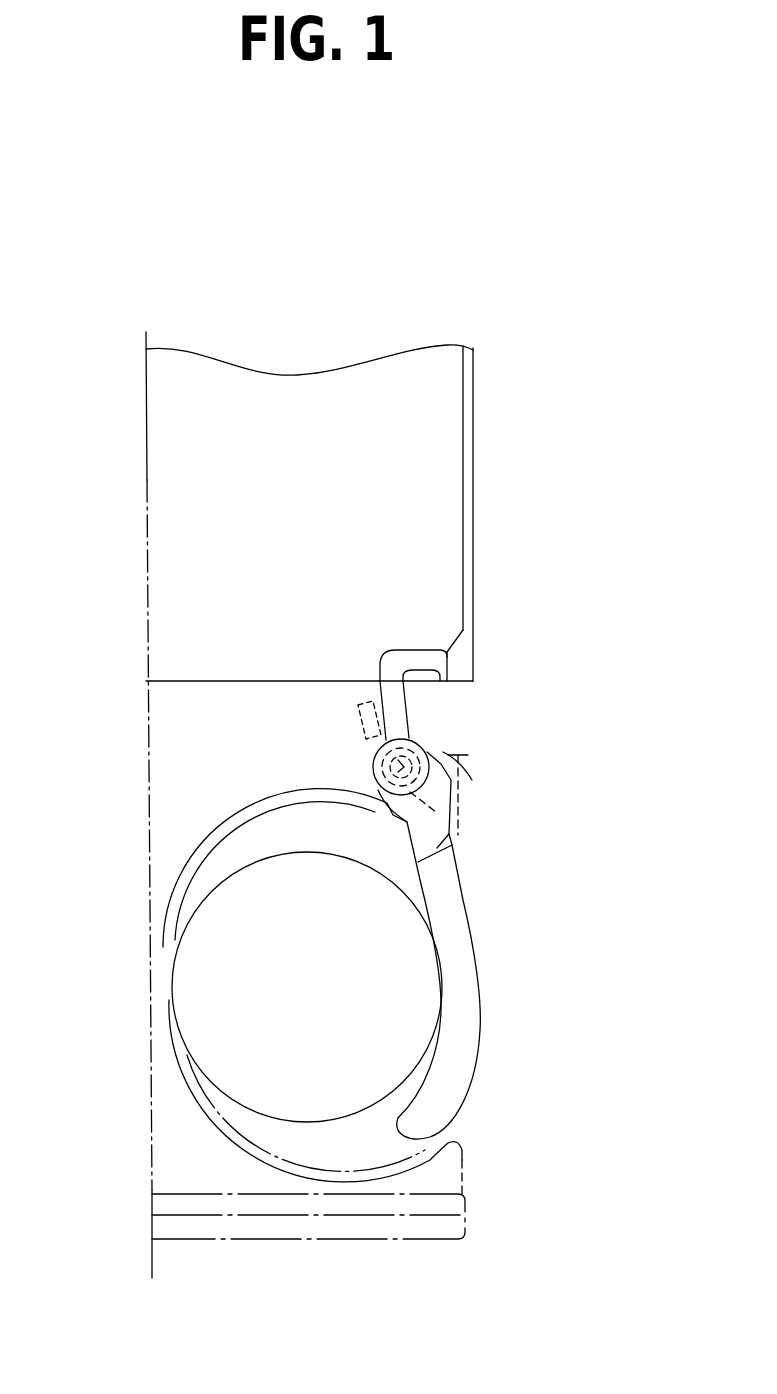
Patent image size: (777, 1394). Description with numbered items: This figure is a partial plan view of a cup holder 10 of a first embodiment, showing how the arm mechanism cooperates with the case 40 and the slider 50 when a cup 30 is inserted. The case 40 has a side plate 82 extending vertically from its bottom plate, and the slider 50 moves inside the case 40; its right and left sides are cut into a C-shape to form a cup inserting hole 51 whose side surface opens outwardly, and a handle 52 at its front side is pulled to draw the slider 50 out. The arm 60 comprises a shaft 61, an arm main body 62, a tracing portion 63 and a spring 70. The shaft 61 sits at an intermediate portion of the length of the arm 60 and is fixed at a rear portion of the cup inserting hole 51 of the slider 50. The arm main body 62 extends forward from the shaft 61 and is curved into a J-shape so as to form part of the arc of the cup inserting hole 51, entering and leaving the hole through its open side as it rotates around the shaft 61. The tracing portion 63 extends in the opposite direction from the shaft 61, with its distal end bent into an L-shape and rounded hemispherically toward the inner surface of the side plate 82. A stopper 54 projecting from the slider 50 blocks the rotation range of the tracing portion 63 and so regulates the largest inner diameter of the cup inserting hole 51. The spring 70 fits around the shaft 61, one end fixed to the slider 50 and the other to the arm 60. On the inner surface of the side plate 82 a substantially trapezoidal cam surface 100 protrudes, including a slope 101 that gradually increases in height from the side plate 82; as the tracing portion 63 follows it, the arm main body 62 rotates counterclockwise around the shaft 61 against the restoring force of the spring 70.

The cup holder 10 is at (97, 272).
The cup 30 is at (197, 997).
The case 40 is at (187, 442).
The slider 50 is at (193, 1144).
The cup inserting hole 51 is at (232, 850).
The handle 52 is at (320, 1230).
The stopper 54 is at (358, 722).
The arm 60 is at (614, 883).
The shaft 61 is at (478, 782).
The arm main body 62 is at (462, 957).
The tracing portion 63 is at (407, 713).
The spring 70 is at (372, 768).
The side plate 82 is at (473, 428).
The cam surface 100 is at (455, 668).
The slope 101 is at (457, 622).